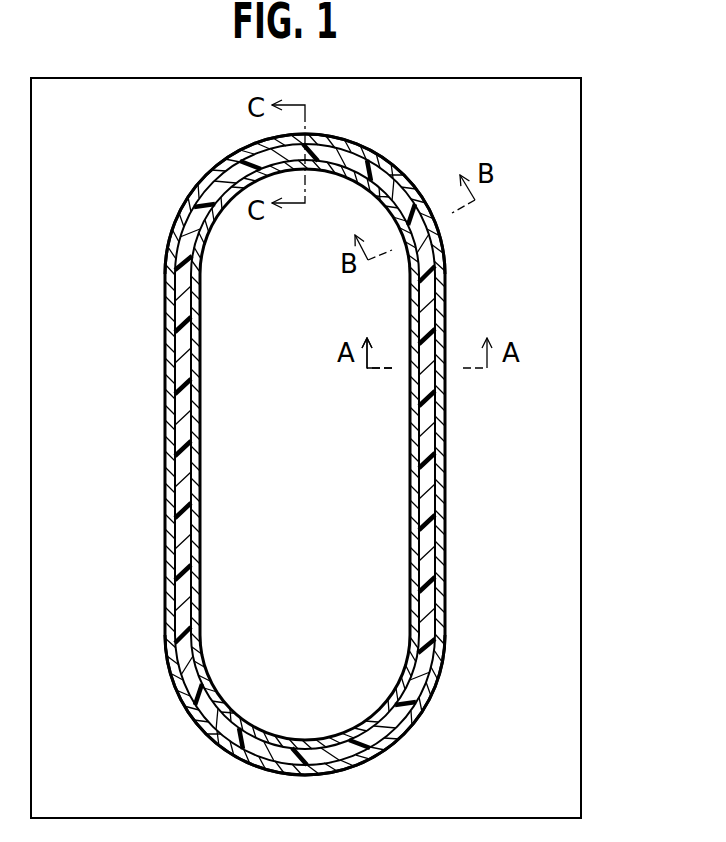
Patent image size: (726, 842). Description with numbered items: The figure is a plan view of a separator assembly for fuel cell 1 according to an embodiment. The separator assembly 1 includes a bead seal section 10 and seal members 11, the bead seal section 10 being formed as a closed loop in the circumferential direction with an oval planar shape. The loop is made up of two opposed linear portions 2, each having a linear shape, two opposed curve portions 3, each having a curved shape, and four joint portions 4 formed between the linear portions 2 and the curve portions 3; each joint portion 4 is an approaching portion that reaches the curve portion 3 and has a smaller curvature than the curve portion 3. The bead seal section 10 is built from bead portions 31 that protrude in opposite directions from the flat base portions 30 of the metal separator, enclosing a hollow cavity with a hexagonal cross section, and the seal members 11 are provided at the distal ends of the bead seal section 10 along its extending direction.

The separator assembly for fuel cell 1 is at (592, 145).
The linear portion 2 is at (160, 482).
The curve portion 3 is at (347, 136).
The joint portion 4 is at (160, 258).
The bead seal section 10 is at (448, 317).
The seal member 11 is at (423, 535).
The flat base portion 30 is at (543, 412).
The bead portion 31 is at (447, 577).